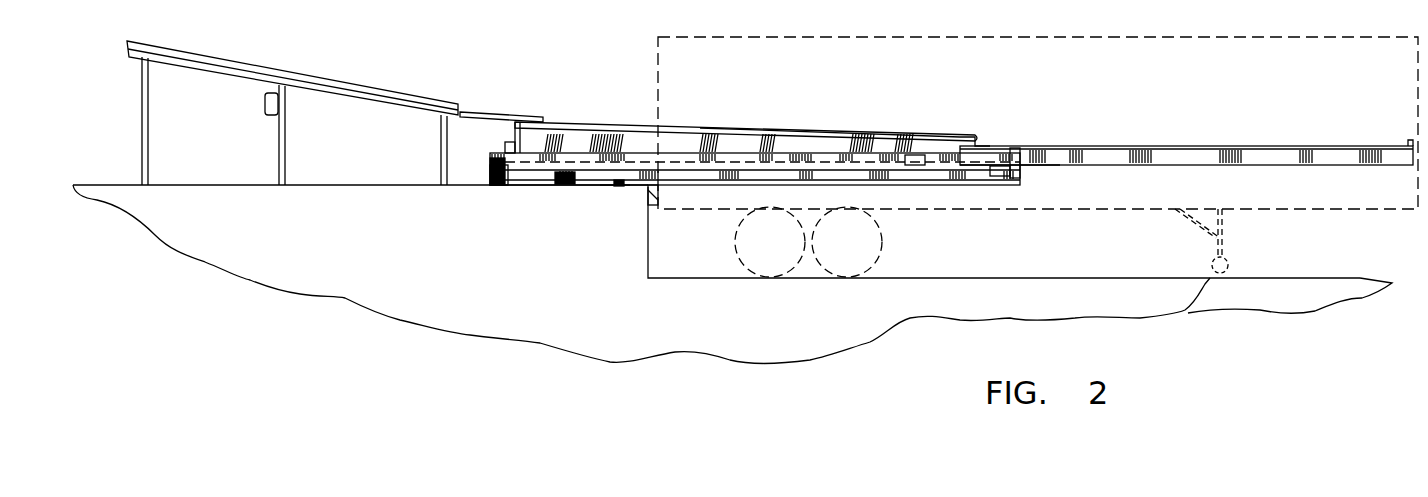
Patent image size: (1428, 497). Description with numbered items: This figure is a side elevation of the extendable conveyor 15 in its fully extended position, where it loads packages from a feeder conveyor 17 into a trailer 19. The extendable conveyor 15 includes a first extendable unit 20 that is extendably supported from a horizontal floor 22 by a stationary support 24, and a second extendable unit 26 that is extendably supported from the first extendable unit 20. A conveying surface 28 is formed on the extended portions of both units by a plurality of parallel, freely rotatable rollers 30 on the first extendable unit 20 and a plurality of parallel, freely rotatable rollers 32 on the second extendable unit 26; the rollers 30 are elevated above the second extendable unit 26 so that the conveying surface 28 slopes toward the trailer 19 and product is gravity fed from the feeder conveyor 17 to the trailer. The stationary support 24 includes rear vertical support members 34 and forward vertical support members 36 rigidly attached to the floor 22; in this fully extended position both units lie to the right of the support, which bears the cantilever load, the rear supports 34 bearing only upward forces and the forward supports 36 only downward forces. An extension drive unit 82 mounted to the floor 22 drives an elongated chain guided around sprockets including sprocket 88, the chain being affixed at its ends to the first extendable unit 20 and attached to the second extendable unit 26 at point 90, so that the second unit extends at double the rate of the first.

The extendable conveyor 15 is at (610, 116).
The feeder conveyor 17 is at (346, 80).
The trailer 19 is at (1265, 35).
The first extendable unit 20 is at (704, 186).
The floor 22 is at (523, 188).
The stationary support 24 is at (607, 193).
The second extendable unit 26 is at (1063, 172).
The conveying surface 28 is at (986, 136).
The rollers 30 is at (743, 128).
The rollers 32 is at (1107, 146).
The rear vertical support member 34 is at (500, 186).
The forward vertical support member 36 is at (620, 188).
The extension drive unit 82 is at (567, 186).
The sprocket 88 is at (997, 172).
The chain attachment point 90 is at (924, 160).